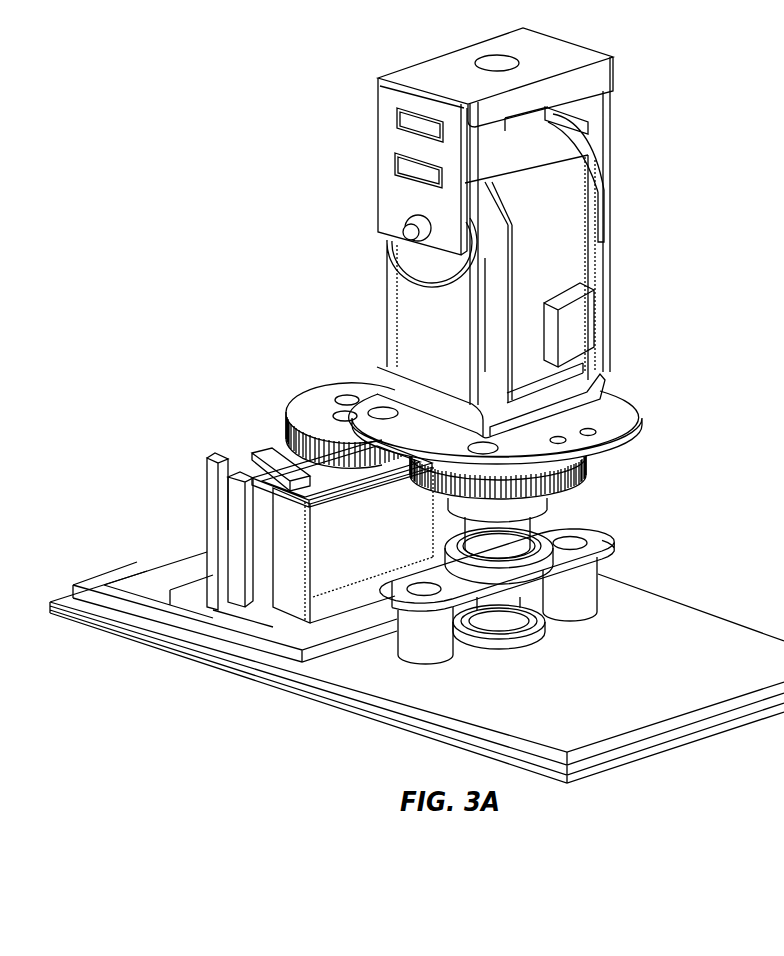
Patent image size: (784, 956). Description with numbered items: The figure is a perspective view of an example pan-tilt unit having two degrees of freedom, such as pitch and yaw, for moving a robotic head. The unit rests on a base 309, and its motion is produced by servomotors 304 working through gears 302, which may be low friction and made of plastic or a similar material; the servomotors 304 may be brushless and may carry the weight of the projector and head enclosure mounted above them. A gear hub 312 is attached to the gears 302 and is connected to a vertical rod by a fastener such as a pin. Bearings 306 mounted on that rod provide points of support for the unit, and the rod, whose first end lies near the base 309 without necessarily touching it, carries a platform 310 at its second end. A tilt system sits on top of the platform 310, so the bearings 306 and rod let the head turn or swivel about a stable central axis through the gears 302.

The gears 302 is at (330, 402).
The servomotors 304 is at (287, 542).
The bearings 306 is at (483, 642).
The base 309 is at (660, 706).
The platform 310 is at (609, 396).
The gear hub 312 is at (545, 506).